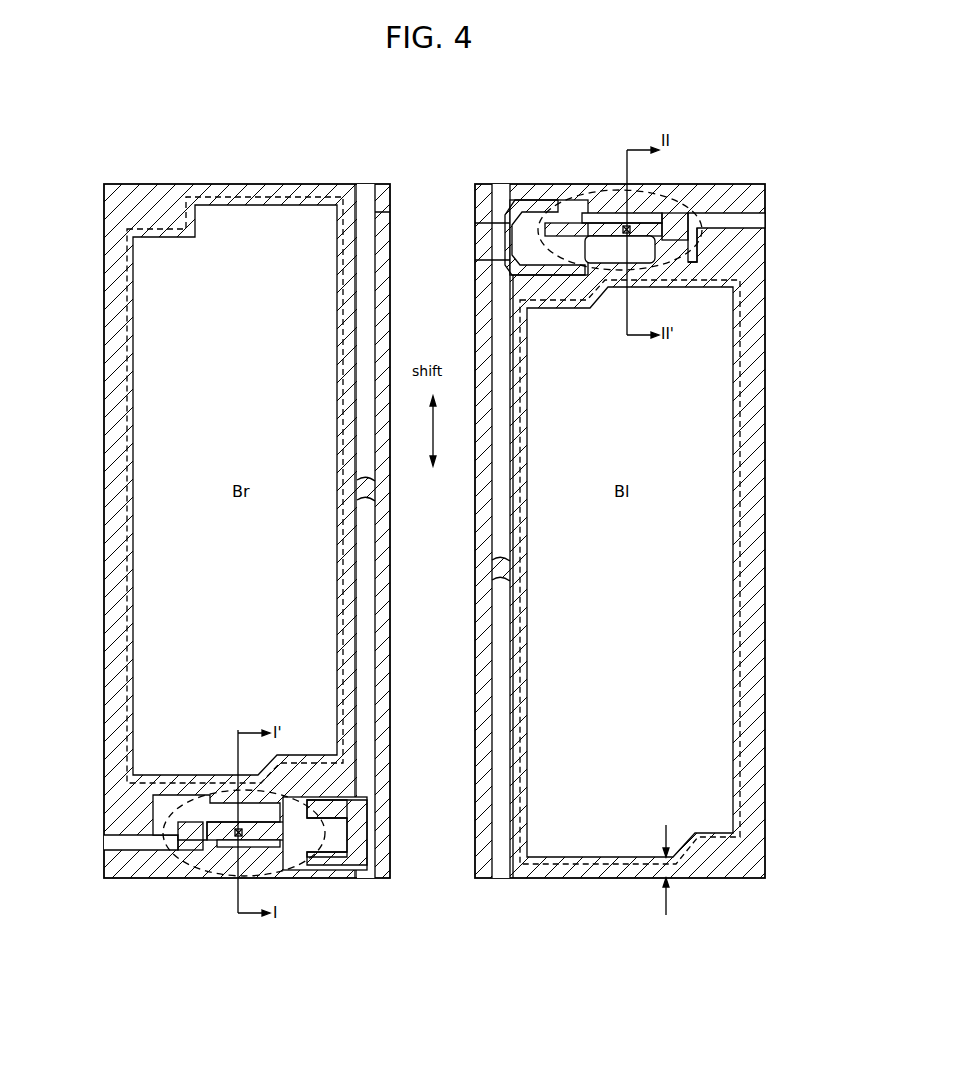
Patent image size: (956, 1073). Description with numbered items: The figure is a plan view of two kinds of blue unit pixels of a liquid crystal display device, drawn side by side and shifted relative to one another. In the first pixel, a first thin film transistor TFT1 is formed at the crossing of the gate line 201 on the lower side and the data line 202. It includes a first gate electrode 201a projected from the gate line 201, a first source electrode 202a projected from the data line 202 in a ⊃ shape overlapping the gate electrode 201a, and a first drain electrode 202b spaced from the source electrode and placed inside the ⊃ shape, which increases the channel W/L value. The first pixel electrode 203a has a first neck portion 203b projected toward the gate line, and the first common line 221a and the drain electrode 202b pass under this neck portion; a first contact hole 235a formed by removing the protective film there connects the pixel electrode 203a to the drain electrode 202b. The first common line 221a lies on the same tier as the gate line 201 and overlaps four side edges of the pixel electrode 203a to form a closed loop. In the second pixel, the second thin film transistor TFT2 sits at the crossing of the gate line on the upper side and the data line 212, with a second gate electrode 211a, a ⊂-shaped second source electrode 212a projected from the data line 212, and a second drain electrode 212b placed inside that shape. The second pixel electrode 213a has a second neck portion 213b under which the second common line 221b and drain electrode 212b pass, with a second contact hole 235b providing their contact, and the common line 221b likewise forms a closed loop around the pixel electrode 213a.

The first gate line 201 is at (142, 865).
The first gate electrode 201a is at (320, 792).
The data line 202 is at (368, 200).
The first source electrode 202a is at (345, 803).
The first drain electrode 202b is at (303, 866).
The first pixel electrode 203a is at (128, 620).
The first neck portion 203b is at (222, 847).
The first common line 221a is at (130, 505).
The second common line 221b is at (735, 550).
The first contact hole 235a is at (185, 852).
The second contact hole 235b is at (640, 213).
The first thin film transistor TFT1 is at (228, 872).
The second thin film transistor TFT2 is at (740, 185).
The second gate electrode 211a is at (553, 268).
The data line 212 is at (500, 283).
The second source electrode 212a is at (535, 200).
The second drain electrode 212b is at (675, 210).
The second pixel electrode 213a is at (762, 432).
The second neck portion 213b is at (590, 215).